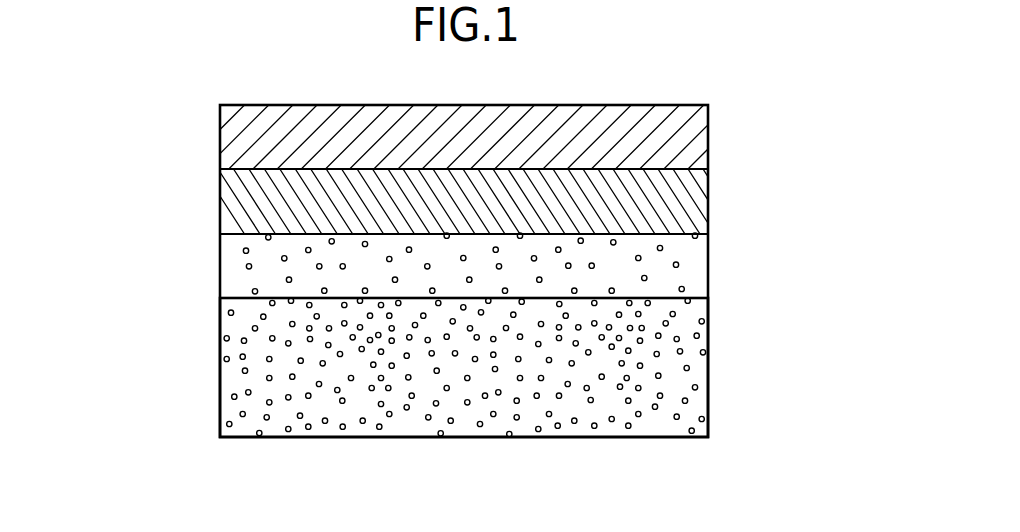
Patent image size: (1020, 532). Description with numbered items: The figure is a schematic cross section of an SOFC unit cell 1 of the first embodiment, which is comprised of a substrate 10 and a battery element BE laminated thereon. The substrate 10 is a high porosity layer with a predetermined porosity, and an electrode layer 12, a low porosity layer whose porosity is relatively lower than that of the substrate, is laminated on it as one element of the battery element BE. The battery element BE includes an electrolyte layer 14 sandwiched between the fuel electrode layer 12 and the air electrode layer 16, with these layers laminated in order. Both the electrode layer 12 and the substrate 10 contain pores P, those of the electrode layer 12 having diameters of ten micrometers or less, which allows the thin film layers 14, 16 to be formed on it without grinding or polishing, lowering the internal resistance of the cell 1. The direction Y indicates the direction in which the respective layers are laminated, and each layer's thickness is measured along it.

The SOFC unit cell 1 is at (739, 96).
The substrate 10 is at (221, 363).
The electrode layer 12 is at (221, 259).
The electrolyte layer 14 is at (221, 200).
The air electrode layer 16 is at (221, 131).
The battery element BE is at (150, 117).
The pores P is at (655, 255).
The direction Y is at (820, 415).